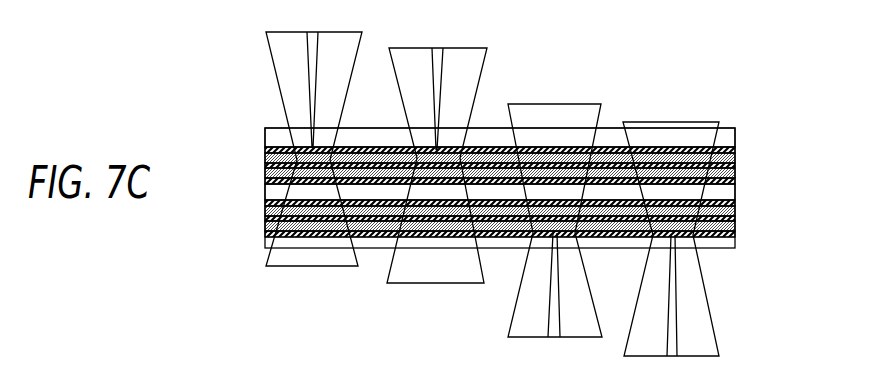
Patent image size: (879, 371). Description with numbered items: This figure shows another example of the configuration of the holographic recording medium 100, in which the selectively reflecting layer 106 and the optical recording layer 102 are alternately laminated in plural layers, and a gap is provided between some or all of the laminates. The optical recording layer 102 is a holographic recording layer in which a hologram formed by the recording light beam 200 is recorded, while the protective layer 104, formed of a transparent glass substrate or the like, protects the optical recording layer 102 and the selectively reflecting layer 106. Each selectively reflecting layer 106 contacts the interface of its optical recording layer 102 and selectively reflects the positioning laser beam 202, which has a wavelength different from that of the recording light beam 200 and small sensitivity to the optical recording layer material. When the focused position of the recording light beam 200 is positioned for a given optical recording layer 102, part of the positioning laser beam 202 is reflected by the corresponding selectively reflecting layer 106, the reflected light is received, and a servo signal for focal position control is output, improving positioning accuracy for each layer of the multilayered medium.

The holographic recording medium 100 is at (268, 132).
The optical recording layer 102 is at (736, 226).
The protective layer 104 is at (374, 128).
The selectively reflecting layer 106 is at (736, 151).
The recording light beam 200 is at (557, 104).
The positioning laser beam 202 is at (438, 48).